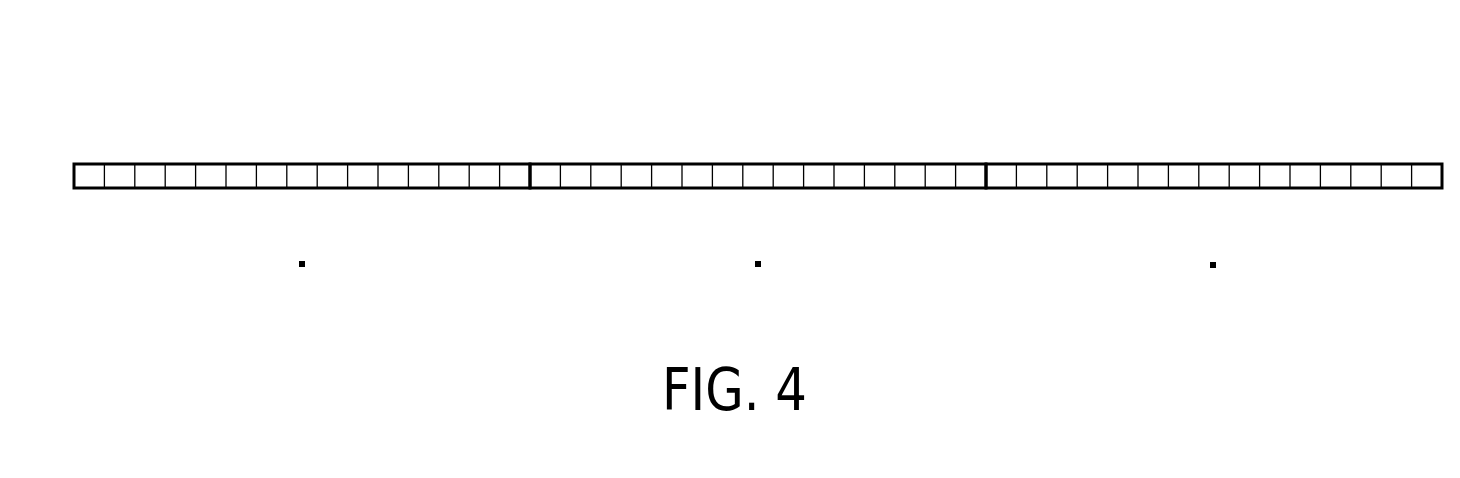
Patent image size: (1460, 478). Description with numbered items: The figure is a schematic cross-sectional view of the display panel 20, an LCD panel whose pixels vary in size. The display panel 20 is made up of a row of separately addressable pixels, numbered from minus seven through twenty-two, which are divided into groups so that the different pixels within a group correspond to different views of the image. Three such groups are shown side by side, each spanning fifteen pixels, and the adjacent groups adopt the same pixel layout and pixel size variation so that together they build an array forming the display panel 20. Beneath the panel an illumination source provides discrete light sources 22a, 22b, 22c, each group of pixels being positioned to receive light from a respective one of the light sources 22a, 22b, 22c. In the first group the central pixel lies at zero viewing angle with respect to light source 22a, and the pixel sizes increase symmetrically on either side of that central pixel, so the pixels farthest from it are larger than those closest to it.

The display panel 20 is at (758, 188).
The light source 22a is at (307, 281).
The light source 22b is at (764, 281).
The light source 22c is at (1218, 282).